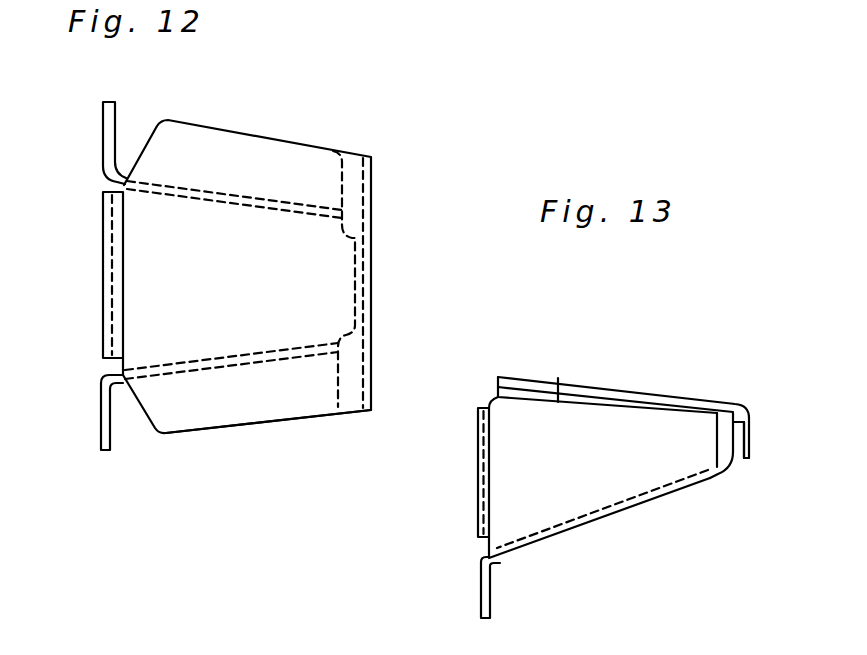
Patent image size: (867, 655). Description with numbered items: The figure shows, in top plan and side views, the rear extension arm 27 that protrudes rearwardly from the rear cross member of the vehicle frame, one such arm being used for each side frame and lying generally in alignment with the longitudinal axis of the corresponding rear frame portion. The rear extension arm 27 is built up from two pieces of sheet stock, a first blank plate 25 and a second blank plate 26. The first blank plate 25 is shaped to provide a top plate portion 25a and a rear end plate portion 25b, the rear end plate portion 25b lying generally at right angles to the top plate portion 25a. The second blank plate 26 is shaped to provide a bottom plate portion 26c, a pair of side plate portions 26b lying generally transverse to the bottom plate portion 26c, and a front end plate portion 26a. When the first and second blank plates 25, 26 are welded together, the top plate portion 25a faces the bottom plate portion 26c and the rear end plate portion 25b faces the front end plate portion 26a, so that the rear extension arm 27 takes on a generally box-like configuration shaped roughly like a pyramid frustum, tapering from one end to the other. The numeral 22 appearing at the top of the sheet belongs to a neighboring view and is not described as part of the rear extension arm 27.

In FIG. 12, the fuel tank 22 is at (480, 17).
In FIG. 12, the first blank plate 25 is at (322, 420).
In FIG. 13, the first blank plate 25 is at (553, 380).
In FIG. 12, the top plate portion 25a is at (262, 400).
In FIG. 13, the top plate portion 25a is at (617, 390).
In FIG. 12, the rear end plate portion 25b is at (372, 282).
In FIG. 13, the rear end plate portion 25b is at (750, 437).
In FIG. 13, the second blank plate 26 is at (537, 547).
In FIG. 12, the front end plate portion 26a is at (100, 403).
In FIG. 13, the front end plate portion 26a is at (478, 520).
In FIG. 12, the side plate portions 26b is at (215, 190).
In FIG. 13, the side plate portions 26b is at (588, 478).
In FIG. 13, the bottom plate portion 26c is at (650, 507).
In FIG. 12, the rear extension arm 27 is at (100, 310).
In FIG. 13, the rear extension arm 27 is at (478, 491).